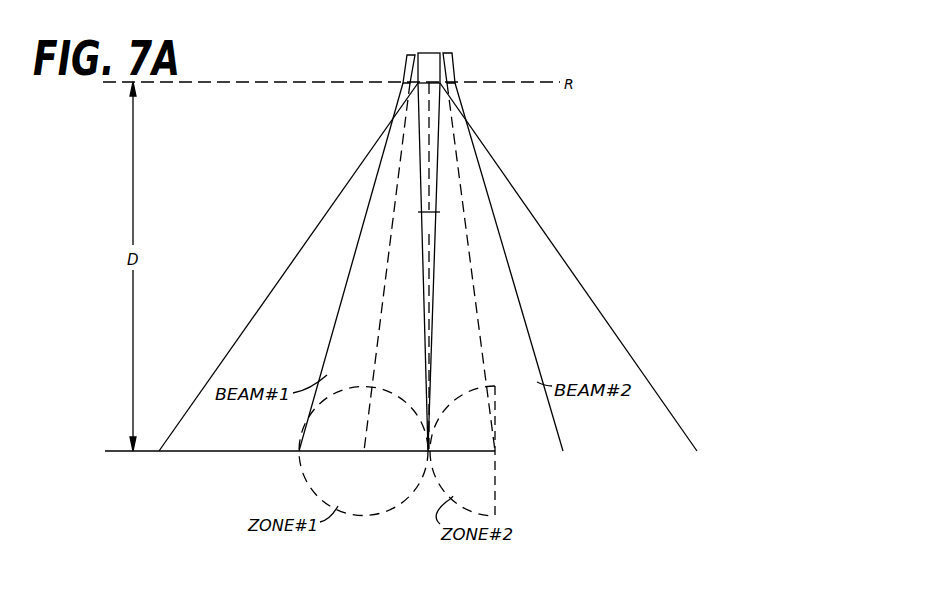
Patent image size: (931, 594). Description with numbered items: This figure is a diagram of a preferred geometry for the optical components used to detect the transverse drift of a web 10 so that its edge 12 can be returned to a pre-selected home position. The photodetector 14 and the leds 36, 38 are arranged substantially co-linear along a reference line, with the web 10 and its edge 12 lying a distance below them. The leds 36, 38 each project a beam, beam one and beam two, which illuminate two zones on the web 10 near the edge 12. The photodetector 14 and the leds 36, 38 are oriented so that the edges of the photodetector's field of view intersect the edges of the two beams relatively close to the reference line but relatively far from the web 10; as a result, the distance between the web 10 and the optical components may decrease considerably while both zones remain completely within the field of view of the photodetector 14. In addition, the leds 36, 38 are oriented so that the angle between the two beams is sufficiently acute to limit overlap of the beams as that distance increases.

The web 10 is at (250, 452).
The edge 12 is at (507, 458).
The photodetector 14 is at (430, 60).
The led 36 is at (405, 63).
The led 38 is at (455, 66).